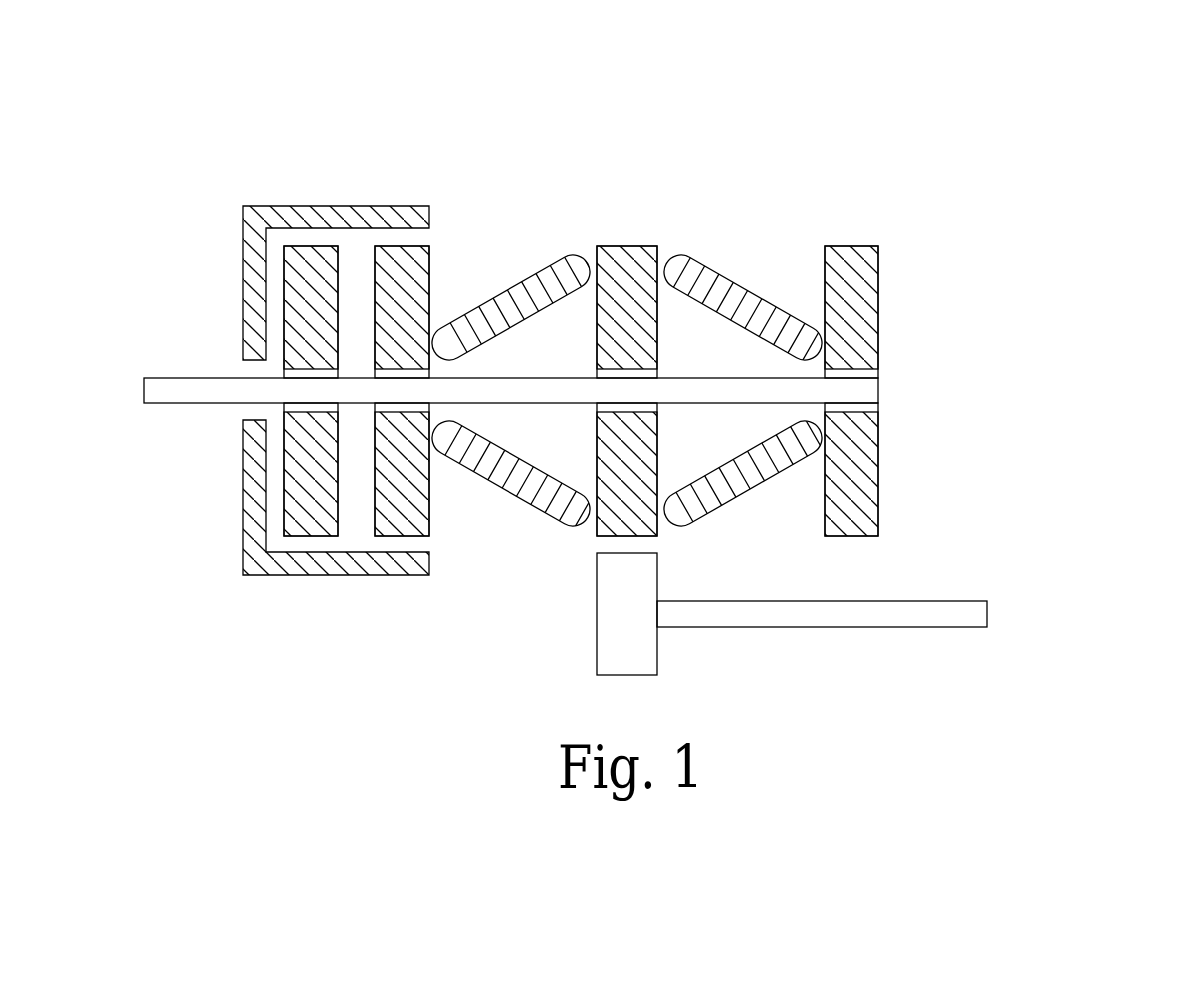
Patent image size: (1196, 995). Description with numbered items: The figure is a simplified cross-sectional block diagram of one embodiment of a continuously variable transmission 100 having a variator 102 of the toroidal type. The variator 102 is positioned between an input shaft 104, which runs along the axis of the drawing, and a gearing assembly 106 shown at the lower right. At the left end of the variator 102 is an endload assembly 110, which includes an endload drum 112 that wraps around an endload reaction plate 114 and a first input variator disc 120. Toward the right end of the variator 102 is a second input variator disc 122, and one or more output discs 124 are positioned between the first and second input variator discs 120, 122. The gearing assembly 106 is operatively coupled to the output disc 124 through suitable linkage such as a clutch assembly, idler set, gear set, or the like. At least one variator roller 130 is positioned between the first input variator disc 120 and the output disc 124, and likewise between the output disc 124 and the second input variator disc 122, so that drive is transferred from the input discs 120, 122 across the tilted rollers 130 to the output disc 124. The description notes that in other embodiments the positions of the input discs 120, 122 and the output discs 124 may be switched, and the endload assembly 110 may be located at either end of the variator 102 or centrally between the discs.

The transmission 100 is at (1066, 157).
The variator 102 is at (633, 148).
The input shaft 104 is at (170, 382).
The gearing assembly 106 is at (657, 652).
The endload assembly 110 is at (312, 141).
The endload drum 112 is at (290, 206).
The endload reaction plate 114 is at (322, 247).
The first input variator disc 120 is at (429, 258).
The second input variator disc 122 is at (853, 250).
The output disc 124 is at (629, 250).
The variator roller 130 is at (537, 271).